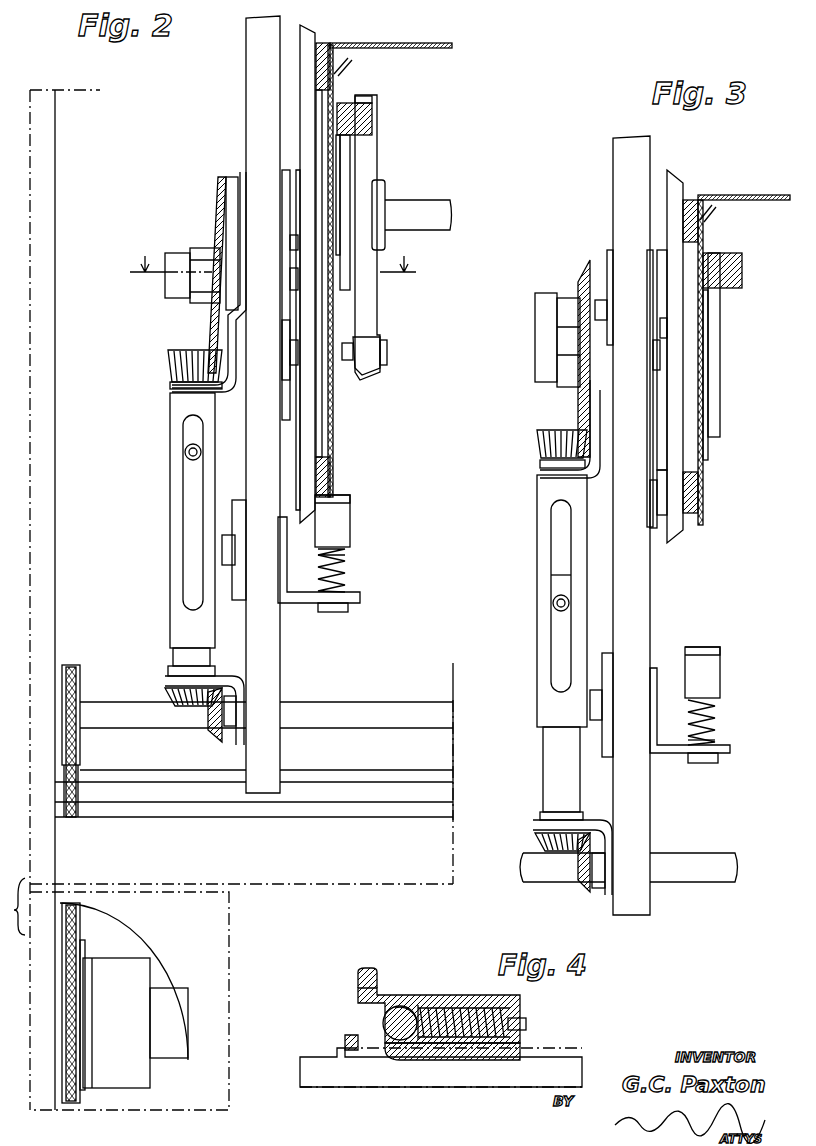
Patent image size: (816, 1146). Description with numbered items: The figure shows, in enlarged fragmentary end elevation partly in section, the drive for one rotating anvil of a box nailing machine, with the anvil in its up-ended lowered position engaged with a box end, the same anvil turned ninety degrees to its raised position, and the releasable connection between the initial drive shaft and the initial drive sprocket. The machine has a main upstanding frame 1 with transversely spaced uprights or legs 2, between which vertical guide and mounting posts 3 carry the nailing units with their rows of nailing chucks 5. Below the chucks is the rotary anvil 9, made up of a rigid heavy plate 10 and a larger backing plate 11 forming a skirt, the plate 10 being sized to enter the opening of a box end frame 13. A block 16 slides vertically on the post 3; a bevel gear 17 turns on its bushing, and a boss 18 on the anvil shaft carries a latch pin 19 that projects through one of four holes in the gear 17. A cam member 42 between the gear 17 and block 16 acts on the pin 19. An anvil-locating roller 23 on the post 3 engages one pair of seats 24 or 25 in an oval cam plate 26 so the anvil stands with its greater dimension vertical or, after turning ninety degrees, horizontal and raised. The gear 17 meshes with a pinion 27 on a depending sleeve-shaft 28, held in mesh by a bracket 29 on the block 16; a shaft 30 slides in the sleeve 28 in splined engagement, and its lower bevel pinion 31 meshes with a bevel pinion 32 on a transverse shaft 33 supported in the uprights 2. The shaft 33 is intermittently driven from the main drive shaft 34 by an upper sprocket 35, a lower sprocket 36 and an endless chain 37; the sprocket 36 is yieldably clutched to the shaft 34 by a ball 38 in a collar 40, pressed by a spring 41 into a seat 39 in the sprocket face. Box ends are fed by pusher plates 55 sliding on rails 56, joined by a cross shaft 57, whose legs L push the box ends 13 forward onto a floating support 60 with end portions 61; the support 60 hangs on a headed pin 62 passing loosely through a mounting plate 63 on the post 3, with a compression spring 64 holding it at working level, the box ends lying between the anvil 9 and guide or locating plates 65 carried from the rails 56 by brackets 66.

In FIG. 2, the main upstanding frame 1 is at (71, 227).
In FIG. 2, the uprights or legs 2 is at (45, 167).
In FIG. 2, the vertical guide and mounting posts 3 is at (258, 80).
In FIG. 3, the vertical guide and mounting posts 3 is at (627, 173).
In FIG. 2, the nailing chucks 5 is at (273, 255).
In FIG. 2, the rotary anvil 9 is at (294, 421).
In FIG. 3, the rotary anvil 9 is at (659, 414).
In FIG. 2, the rigid heavy plate 10 is at (320, 200).
In FIG. 3, the rigid heavy plate 10 is at (690, 431).
In FIG. 2, the backing plate 11 is at (300, 134).
In FIG. 3, the backing plate 11 is at (672, 221).
In FIG. 2, the rectangular end frame of box 13 is at (338, 70).
In FIG. 3, the rectangular end frame of box 13 is at (702, 226).
In FIG. 2, the block 16 is at (243, 178).
In FIG. 3, the block 16 is at (608, 263).
In FIG. 2, the bevel gear 17 is at (214, 226).
In FIG. 3, the bevel gear 17 is at (578, 403).
In FIG. 2, the boss 18 is at (172, 290).
In FIG. 3, the boss 18 is at (542, 309).
In FIG. 3, the latch pin 19 is at (602, 310).
In FIG. 2, the anvil-locating roller 23 is at (297, 346).
In FIG. 3, the anvil-locating roller 23 is at (664, 498).
In FIG. 2, the seats 24 is at (300, 280).
In FIG. 3, the seats 25 is at (666, 359).
In FIG. 2, the cam plate 26 is at (300, 240).
In FIG. 2, the pinion 27 is at (168, 362).
In FIG. 3, the pinion 27 is at (540, 441).
In FIG. 2, the sleeve-shaft 28 is at (180, 420).
In FIG. 3, the sleeve-shaft 28 is at (540, 529).
In FIG. 2, the bracket 29 is at (225, 392).
In FIG. 3, the bracket 29 is at (565, 472).
In FIG. 2, the shaft 30 is at (182, 650).
In FIG. 3, the shaft 30 is at (555, 758).
In FIG. 2, the bevel pinion 31 is at (186, 696).
In FIG. 3, the bevel pinion 31 is at (552, 852).
In FIG. 2, the bevel pinion 32 is at (213, 730).
In FIG. 3, the bevel pinion 32 is at (578, 880).
In FIG. 2, the transverse shaft 33 is at (332, 708).
In FIG. 3, the transverse shaft 33 is at (690, 880).
In FIG. 2, the main transverse frame-mounted drive shaft 34 is at (168, 1002).
In FIG. 4, the main transverse frame-mounted drive shaft 34 is at (535, 1067).
In FIG. 2, the upper sprocket 35 is at (82, 690).
In FIG. 2, the lower sprocket 36 is at (80, 952).
In FIG. 4, the lower sprocket 36 is at (358, 996).
In FIG. 2, the endless chain 37 is at (76, 783).
In FIG. 4, the ball 38 is at (400, 1015).
In FIG. 4, the seat 39 is at (358, 1018).
In FIG. 2, the collar 40 is at (135, 962).
In FIG. 4, the collar 40 is at (442, 1002).
In FIG. 4, the spring 41 is at (520, 1018).
In FIG. 2, the cam member 42 is at (230, 252).
In FIG. 2, the pusher plates 55 is at (370, 153).
In FIG. 2, the rails 56 is at (372, 112).
In FIG. 3, the rails 56 is at (743, 273).
In FIG. 2, the cross shaft 57 is at (430, 205).
In FIG. 2, the floating support 60 is at (338, 526).
In FIG. 3, the floating support 60 is at (715, 688).
In FIG. 2, the end portions 61 is at (337, 497).
In FIG. 3, the end portions 61 is at (706, 648).
In FIG. 2, the headed pin 62 is at (345, 576).
In FIG. 3, the headed pin 62 is at (718, 712).
In FIG. 2, the mounting plate 63 is at (350, 605).
In FIG. 3, the mounting plate 63 is at (735, 755).
In FIG. 2, the compression spring 64 is at (345, 558).
In FIG. 3, the compression spring 64 is at (717, 736).
In FIG. 2, the guide or locating plates 65 is at (336, 312).
In FIG. 3, the guide or locating plates 65 is at (704, 356).
In FIG. 2, the brackets 66 is at (348, 183).
In FIG. 3, the brackets 66 is at (718, 396).
In FIG. 2, the legs L is at (354, 347).